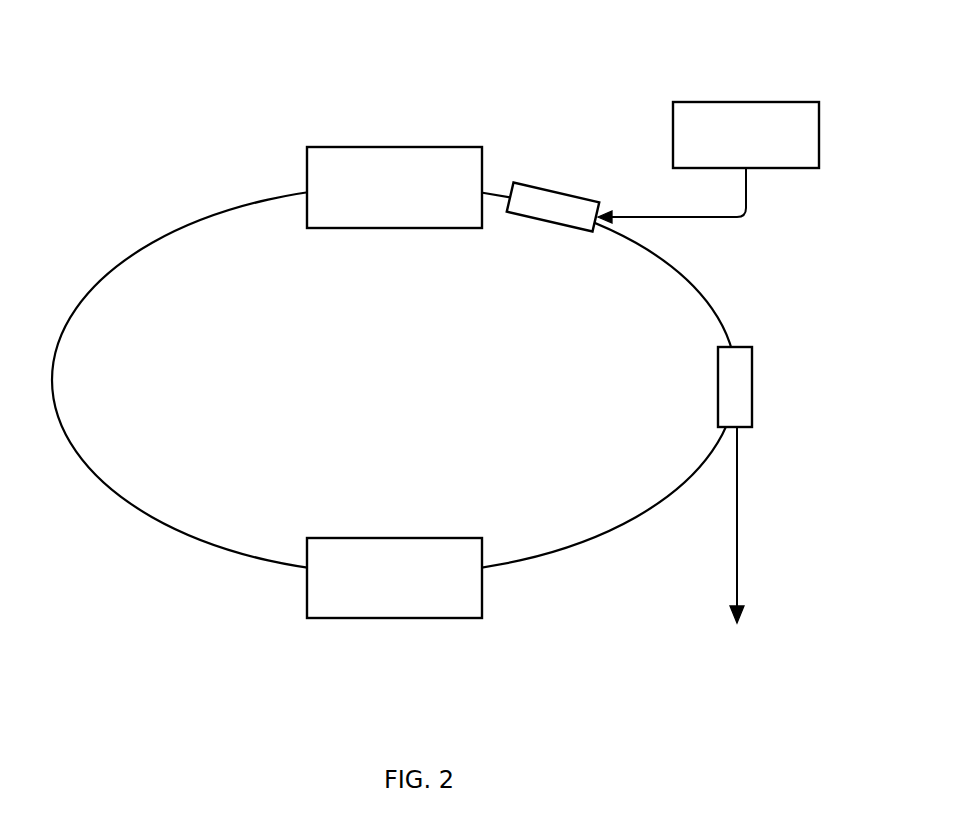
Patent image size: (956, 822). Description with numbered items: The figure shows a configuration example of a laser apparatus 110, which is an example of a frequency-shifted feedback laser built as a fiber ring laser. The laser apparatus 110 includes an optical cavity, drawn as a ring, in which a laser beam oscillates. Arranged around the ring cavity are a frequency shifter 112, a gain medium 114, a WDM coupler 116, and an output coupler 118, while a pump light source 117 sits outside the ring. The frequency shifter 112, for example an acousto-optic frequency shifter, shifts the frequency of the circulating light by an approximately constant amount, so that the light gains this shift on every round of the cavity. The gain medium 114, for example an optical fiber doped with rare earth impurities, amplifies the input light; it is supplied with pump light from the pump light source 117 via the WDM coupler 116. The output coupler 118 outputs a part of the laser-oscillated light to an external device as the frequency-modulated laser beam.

The laser apparatus 110 is at (507, 63).
The frequency shifter 112 is at (340, 538).
The gain medium 114 is at (338, 147).
The WDM coupler 116 is at (532, 183).
The pump light source 117 is at (702, 100).
The output coupler 118 is at (752, 380).